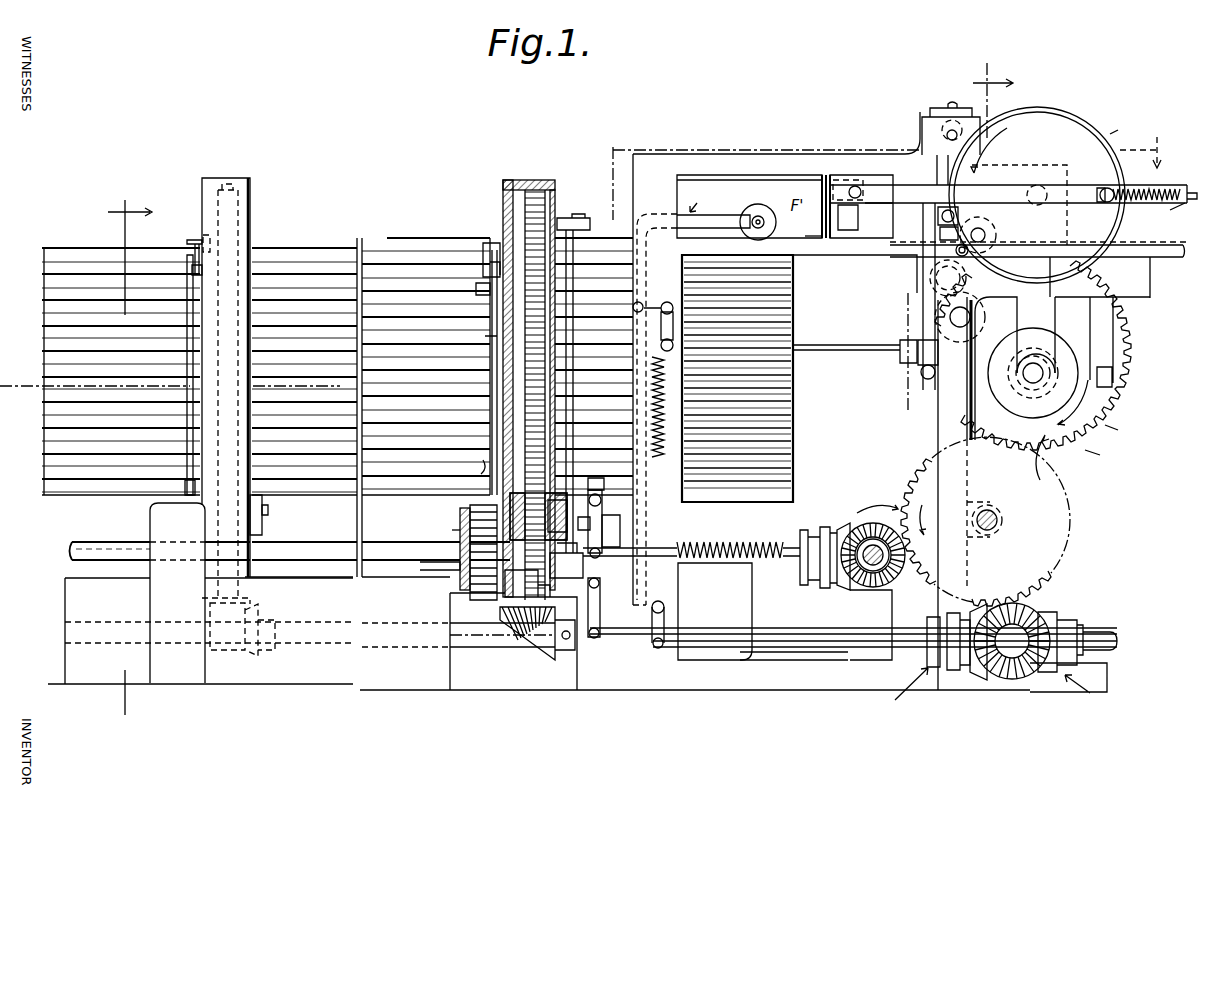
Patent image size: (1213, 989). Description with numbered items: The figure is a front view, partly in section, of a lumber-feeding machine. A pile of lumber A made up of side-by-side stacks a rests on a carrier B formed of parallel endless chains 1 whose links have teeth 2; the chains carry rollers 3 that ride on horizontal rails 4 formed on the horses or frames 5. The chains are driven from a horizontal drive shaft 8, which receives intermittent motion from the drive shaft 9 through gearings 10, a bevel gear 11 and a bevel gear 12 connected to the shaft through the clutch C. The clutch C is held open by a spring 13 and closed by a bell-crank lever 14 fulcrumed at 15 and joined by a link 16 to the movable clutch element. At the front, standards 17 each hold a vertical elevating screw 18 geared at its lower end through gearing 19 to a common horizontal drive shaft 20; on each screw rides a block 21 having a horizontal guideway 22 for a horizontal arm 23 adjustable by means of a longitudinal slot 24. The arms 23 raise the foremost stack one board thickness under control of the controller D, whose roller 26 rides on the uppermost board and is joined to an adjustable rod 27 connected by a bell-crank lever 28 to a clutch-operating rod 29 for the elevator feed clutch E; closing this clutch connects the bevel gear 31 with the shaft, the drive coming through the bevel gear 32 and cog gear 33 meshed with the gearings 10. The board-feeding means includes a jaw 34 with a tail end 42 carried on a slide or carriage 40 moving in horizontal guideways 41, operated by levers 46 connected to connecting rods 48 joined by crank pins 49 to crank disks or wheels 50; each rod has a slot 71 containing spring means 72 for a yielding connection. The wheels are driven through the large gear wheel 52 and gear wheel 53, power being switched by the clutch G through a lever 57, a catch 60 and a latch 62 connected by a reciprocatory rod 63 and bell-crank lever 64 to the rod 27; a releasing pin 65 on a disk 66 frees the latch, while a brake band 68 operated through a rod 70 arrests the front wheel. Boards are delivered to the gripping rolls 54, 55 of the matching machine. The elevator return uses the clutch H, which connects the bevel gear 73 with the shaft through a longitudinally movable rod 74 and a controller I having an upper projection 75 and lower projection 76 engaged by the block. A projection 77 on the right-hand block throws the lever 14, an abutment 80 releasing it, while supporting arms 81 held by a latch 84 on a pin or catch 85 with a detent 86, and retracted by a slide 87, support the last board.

The endless chains 1 is at (440, 571).
The teeth 2 is at (1158, 152).
The rollers 3 is at (130, 462).
The horizontal rails 4 is at (956, 244).
The horses or frames 5 is at (452, 527).
The drive shaft 8 is at (312, 552).
The drive shaft 9 is at (1002, 522).
The gearings 10 is at (908, 521).
The bevel gear 11 is at (875, 588).
The bevel gear 12 is at (840, 588).
The spring 13 is at (718, 540).
The bell-crank lever 14 is at (605, 530).
The fulcrum 15 is at (620, 517).
The link 16 is at (700, 560).
The standards 17 is at (252, 427).
The elevating screw 18 is at (503, 425).
The gearing 19 is at (535, 645).
The horizontal drive shaft 20 is at (485, 648).
The block 21 is at (480, 490).
The horizontal guideway 22 is at (262, 500).
The horizontal arm 23 is at (554, 495).
The longitudinal slot 24 is at (585, 524).
The roller 26 is at (760, 210).
The adjustable rod 27 is at (737, 378).
The bell-crank lever 28 is at (702, 611).
The clutch-operating rod 29 is at (760, 652).
The bevel gear 31 is at (975, 685).
The bevel gear 32 is at (1010, 680).
The cog gear 33 is at (1040, 598).
The jaw 34 is at (826, 172).
The slide or carriage 40 is at (848, 246).
The horizontal guideways 41 is at (758, 172).
The tail end 42 is at (804, 231).
The levers 46 is at (870, 172).
The connecting rods 48 is at (990, 195).
The crank pins 49 is at (1038, 200).
The crank disks or wheels 50 is at (1080, 132).
The large gear wheel 52 is at (1079, 457).
The gear wheel 53 is at (1124, 434).
The gripping roll 54 is at (998, 225).
The gripping roll 55 is at (996, 262).
The lever 57 is at (1120, 400).
The catch 60 is at (1058, 368).
The latch 62 is at (972, 317).
The reciprocatory rod 63 is at (800, 345).
The bell-crank lever 64 is at (680, 325).
The releasing pin 65 is at (1033, 345).
The disk 66 is at (1060, 355).
The brake band 68 is at (1127, 134).
The rod 70 is at (913, 296).
The slot 71 is at (1160, 190).
The spring means 72 is at (1182, 215).
The bevel gear 73 is at (1055, 680).
The longitudinally movable rod 74 is at (610, 645).
The upper projection 75 is at (576, 242).
The lower projection 76 is at (583, 568).
The projection 77 is at (597, 472).
The abutment 80 is at (653, 415).
The supporting arms 81 is at (460, 282).
The latch 84 is at (483, 262).
The pin or catch 85 is at (485, 340).
The detent 86 is at (346, 266).
The slide 87 is at (320, 475).
The pile of lumber A is at (337, 366).
The carrier B is at (469, 552).
The clutch C is at (856, 515).
The controller D is at (713, 210).
The elevator feed clutch E is at (927, 667).
The clutch G is at (1004, 519).
The clutch H is at (1072, 689).
The controller I is at (575, 416).
The stack a is at (311, 512).